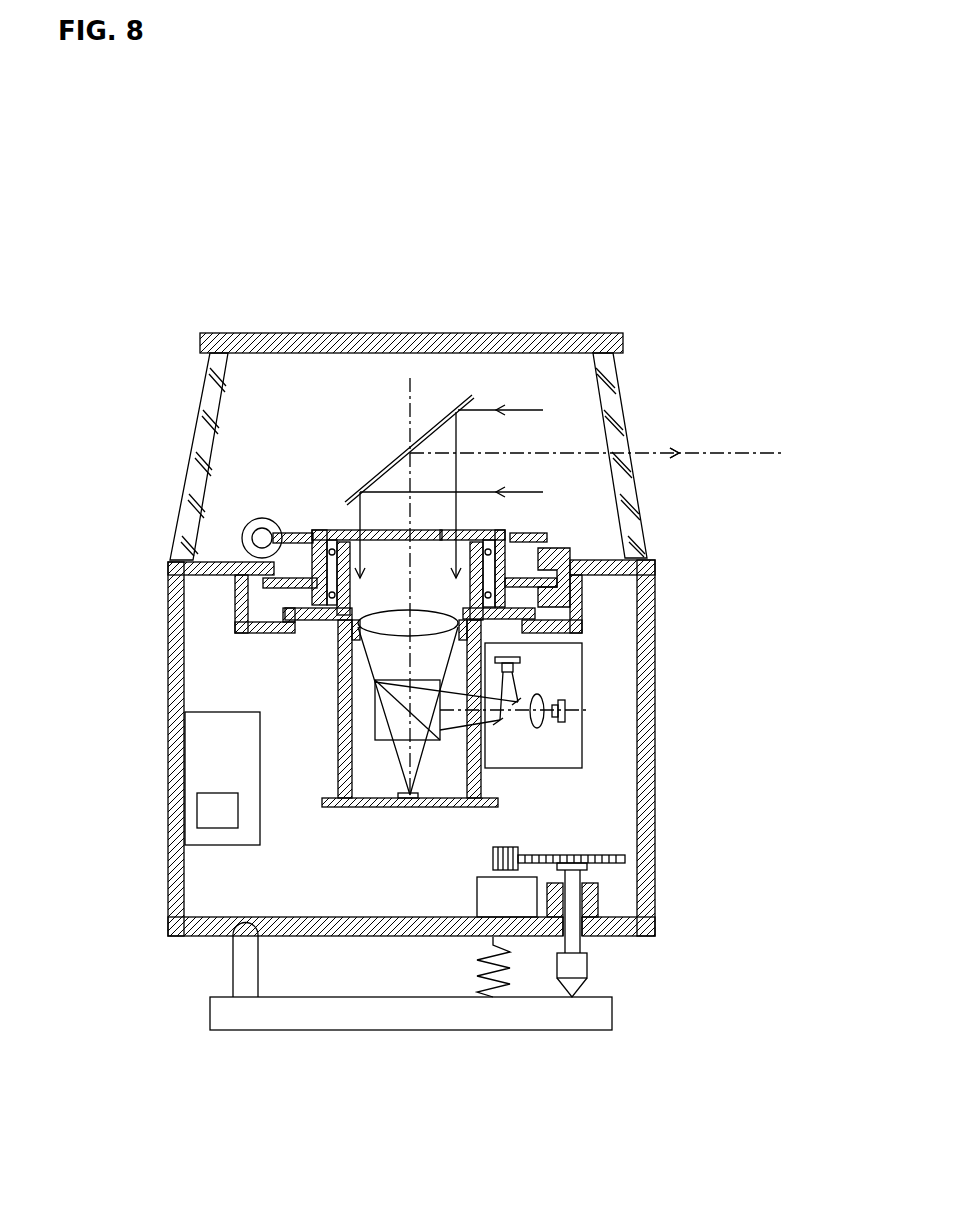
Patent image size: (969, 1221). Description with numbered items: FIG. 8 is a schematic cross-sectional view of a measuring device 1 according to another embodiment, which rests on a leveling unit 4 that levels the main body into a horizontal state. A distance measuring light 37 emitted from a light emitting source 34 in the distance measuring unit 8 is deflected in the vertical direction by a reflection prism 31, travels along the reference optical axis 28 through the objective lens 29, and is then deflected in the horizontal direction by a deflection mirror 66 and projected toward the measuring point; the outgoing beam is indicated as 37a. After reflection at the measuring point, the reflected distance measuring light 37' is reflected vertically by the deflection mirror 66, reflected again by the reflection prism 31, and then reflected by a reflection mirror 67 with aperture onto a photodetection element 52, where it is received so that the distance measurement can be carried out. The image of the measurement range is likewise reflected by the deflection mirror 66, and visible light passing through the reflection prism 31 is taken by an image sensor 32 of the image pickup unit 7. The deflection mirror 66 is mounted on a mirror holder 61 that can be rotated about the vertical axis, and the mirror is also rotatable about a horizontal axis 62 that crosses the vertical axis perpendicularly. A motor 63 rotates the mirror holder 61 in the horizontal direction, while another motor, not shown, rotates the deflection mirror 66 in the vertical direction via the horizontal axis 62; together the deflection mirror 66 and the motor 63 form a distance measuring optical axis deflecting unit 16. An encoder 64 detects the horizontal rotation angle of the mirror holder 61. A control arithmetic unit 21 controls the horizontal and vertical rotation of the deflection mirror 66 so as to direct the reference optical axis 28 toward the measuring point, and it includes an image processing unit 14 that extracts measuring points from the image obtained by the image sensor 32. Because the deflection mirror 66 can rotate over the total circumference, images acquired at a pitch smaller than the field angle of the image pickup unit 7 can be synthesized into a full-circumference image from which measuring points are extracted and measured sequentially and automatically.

The measuring device 1 is at (414, 229).
The distance measuring optical axis deflecting unit 16 is at (390, 452).
The horizontal axis 62 is at (418, 442).
The deflection mirror 66 is at (464, 398).
The reflected distance measuring light 37' is at (467, 435).
The reference optical axis 28 is at (712, 452).
The outgoing light beam 37a is at (674, 453).
The mirror holder 61 is at (363, 618).
The motor 63 is at (260, 517).
The objective lens 29 is at (375, 480).
The encoder 64 is at (567, 538).
The control arithmetic unit 21 is at (222, 712).
The reflection prism 31 is at (375, 682).
The photodetection element 52 is at (520, 660).
The distance measuring unit 8 is at (584, 680).
The light emitting source 34 is at (565, 712).
The image processing unit 14 is at (197, 800).
The reflection mirror with aperture 67 is at (498, 722).
The distance measuring light 37 is at (560, 761).
The image pickup unit 7 is at (393, 772).
The image sensor 32 is at (412, 792).
The leveling unit 4 is at (614, 897).